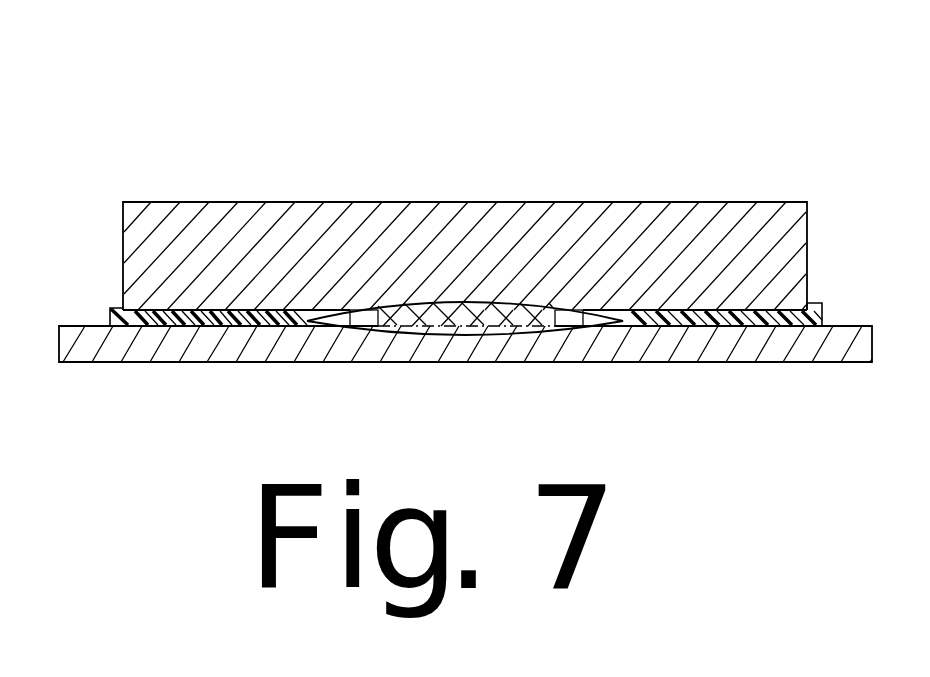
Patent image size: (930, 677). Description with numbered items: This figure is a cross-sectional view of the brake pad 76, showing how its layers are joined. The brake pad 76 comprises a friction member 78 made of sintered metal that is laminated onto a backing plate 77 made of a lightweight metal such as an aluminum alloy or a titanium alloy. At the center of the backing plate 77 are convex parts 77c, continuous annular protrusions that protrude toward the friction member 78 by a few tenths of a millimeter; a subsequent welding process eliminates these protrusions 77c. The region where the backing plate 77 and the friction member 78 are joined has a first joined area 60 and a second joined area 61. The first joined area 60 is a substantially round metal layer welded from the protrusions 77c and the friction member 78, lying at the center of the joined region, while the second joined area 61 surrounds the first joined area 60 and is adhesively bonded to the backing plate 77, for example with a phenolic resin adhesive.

The brake pad 76 is at (617, 170).
The friction member 78 is at (781, 222).
The backing plate 77 is at (838, 347).
The convex parts 77c is at (362, 311).
The second joined area 61 is at (708, 310).
The first joined area 60 is at (448, 311).